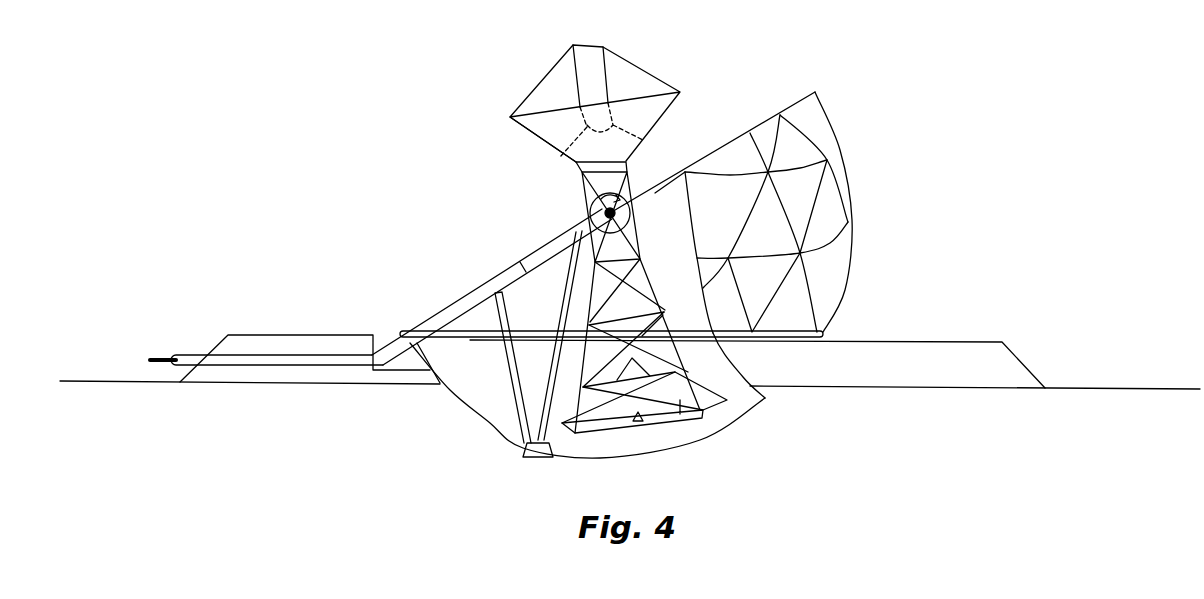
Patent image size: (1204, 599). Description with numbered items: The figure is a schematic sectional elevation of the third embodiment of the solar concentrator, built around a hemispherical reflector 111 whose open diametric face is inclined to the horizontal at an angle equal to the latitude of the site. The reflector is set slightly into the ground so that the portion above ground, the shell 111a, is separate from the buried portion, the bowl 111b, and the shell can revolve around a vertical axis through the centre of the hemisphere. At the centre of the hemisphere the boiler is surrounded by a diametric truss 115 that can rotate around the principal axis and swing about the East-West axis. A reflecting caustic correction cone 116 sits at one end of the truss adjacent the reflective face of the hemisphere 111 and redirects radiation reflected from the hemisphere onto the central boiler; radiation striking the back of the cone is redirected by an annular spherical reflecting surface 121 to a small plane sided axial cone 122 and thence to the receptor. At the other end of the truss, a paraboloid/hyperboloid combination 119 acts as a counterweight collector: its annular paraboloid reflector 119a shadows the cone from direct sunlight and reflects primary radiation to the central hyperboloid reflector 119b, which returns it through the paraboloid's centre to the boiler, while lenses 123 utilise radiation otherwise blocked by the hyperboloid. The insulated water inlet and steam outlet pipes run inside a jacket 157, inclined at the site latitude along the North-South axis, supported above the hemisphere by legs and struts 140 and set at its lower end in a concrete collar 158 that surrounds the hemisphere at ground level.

The hemispherical reflector 111 is at (682, 279).
The shell 111a is at (763, 212).
The bowl 111b is at (740, 418).
The diametric truss 115 is at (645, 275).
The caustic correction cone 116 is at (593, 428).
The paraboloid/hyperboloid combination 119 is at (594, 89).
The annular paraboloid reflector 119a is at (526, 144).
The hyperboloid reflector 119b is at (616, 149).
The annular spherical reflecting surface 121 is at (563, 428).
The plane sided axial cone 122 is at (638, 421).
The lenses 123 is at (581, 46).
The struts 140 is at (562, 305).
The jacket 157 is at (522, 266).
The concrete collar 158 is at (402, 361).